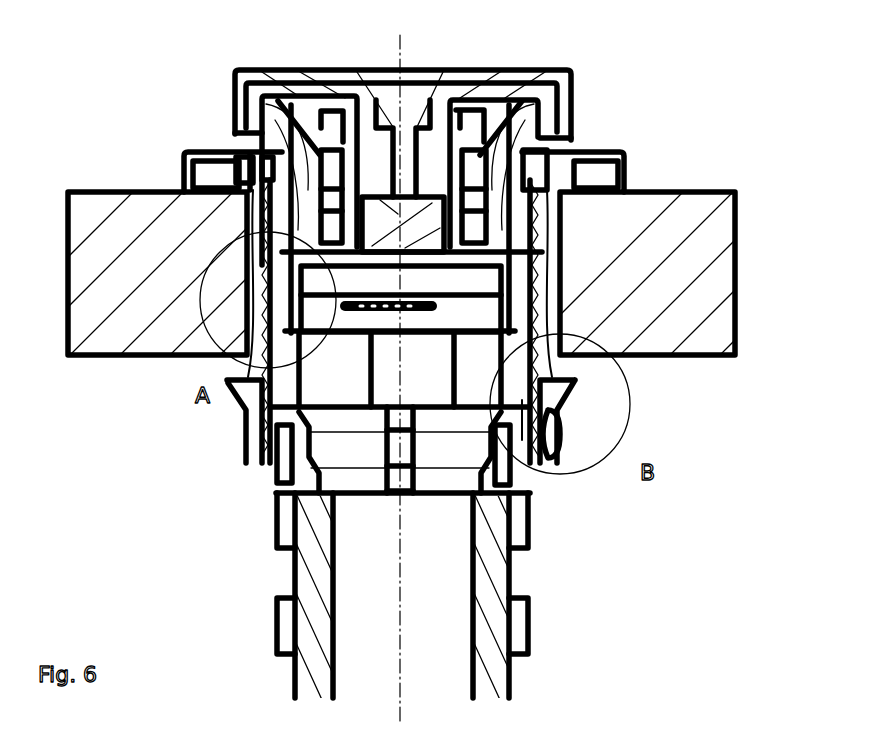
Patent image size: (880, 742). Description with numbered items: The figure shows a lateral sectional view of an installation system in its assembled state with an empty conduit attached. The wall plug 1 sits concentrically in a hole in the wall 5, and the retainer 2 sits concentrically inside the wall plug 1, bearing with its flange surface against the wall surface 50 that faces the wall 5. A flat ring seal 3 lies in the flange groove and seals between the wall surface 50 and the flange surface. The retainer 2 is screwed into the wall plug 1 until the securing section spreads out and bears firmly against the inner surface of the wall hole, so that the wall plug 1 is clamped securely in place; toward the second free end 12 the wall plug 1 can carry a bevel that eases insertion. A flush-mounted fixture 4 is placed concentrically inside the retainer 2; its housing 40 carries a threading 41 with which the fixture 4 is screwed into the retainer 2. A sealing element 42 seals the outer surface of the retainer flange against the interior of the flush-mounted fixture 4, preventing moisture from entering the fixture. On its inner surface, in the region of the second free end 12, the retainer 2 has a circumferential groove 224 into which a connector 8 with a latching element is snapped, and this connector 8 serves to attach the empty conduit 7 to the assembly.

The wall plug 1 is at (553, 424).
The retainer 2 is at (273, 468).
The flat ring seal 3 is at (600, 173).
The flush-mounted fixture 4 is at (190, 79).
The wall 5 is at (93, 212).
The empty conduit 7 is at (487, 581).
The connector 8 is at (517, 491).
The second free end 12 is at (404, 461).
The housing 40 is at (502, 177).
The threading 41 is at (262, 115).
The sealing element 42 is at (573, 87).
The wall surface 50 is at (707, 197).
The circumferential groove 224 is at (253, 438).